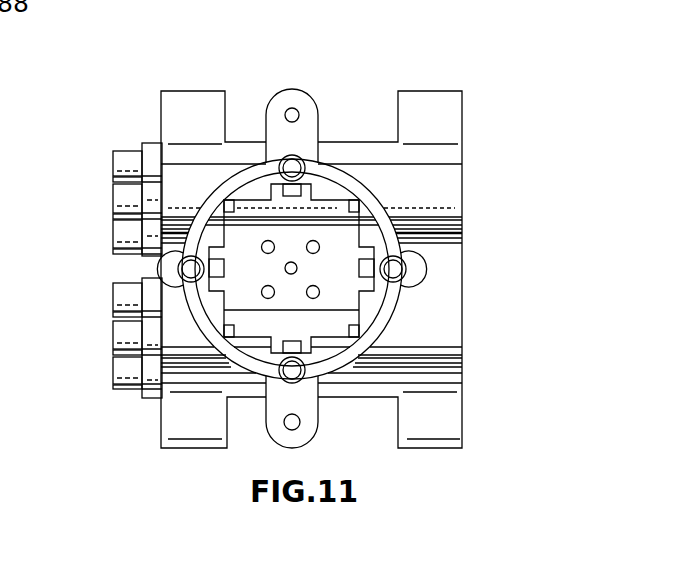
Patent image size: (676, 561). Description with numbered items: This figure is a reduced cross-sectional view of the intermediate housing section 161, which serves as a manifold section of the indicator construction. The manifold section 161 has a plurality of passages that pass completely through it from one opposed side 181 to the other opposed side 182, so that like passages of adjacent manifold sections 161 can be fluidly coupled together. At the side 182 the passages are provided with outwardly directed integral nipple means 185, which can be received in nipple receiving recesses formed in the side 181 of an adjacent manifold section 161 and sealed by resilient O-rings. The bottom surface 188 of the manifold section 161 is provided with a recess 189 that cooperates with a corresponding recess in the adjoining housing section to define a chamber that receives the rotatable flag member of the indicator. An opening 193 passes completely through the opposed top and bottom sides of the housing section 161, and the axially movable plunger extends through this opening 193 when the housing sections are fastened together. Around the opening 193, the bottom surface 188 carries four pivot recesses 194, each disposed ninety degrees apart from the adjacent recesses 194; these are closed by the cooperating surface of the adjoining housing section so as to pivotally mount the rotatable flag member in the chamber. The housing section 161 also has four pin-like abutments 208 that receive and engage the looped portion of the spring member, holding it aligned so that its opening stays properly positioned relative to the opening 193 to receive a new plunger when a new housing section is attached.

The intermediate housing section 161 is at (441, 65).
The opposed side 181 is at (463, 251).
The opposed side 182 is at (174, 268).
The nipple means 185 is at (118, 230).
The bottom surface 188 is at (322, 166).
The recess 189 is at (346, 238).
The opening 193 is at (285, 268).
The pivot recesses 194 is at (221, 228).
The pin-like abutments 208 is at (266, 241).